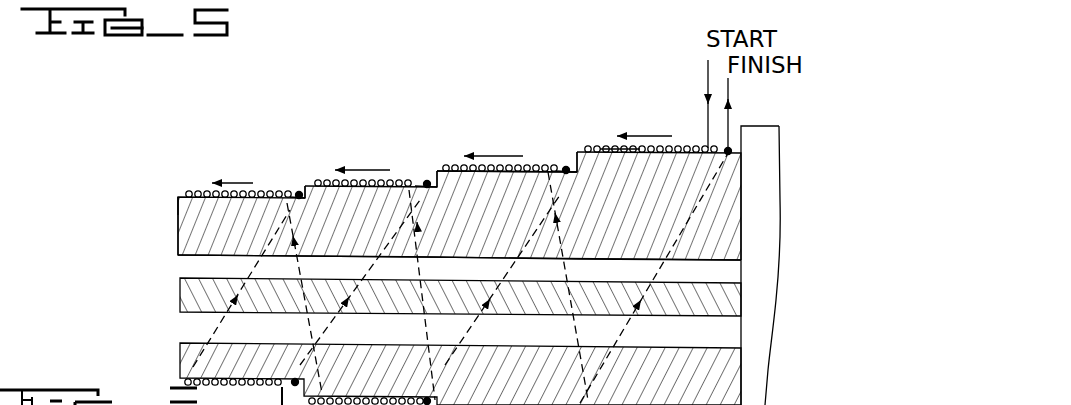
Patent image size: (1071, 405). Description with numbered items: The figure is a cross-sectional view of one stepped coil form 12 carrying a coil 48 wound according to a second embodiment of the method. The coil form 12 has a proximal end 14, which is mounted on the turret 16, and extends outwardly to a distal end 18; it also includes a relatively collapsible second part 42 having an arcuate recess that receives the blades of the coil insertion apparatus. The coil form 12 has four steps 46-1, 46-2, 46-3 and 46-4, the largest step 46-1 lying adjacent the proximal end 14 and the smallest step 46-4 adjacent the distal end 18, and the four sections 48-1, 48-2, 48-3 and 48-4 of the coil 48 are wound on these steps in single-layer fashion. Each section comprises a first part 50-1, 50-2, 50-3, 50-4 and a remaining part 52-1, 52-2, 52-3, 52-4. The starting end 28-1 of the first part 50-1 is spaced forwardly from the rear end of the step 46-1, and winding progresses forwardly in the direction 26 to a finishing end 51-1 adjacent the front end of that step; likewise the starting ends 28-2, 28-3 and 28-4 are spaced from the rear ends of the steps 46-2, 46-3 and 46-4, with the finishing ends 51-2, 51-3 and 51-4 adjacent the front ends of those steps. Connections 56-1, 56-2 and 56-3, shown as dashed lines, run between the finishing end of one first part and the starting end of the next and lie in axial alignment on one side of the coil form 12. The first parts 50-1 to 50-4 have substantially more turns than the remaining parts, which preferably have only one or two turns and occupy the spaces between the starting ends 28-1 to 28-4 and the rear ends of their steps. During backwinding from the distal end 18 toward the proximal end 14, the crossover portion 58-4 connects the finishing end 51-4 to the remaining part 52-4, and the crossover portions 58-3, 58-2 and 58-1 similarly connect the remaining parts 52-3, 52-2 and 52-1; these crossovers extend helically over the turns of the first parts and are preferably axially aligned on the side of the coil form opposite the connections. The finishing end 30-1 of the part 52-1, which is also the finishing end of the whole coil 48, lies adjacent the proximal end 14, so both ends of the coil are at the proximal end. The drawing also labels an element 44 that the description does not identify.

The coil form 12 is at (72, 227).
The proximal end 14 is at (743, 217).
The turret 16 is at (781, 177).
The distal end 18 is at (177, 226).
The direction 26 is at (665, 130).
The starting end 28-1 is at (706, 60).
The starting end 28-2 is at (553, 166).
The starting end 28-3 is at (412, 182).
The starting end 28-4 is at (296, 195).
The finishing end 30-1 is at (732, 97).
The second part 42 is at (146, 351).
The lower layer 44 is at (192, 328).
The coil form step 46-1 is at (660, 224).
The coil form step 46-2 is at (513, 232).
The coil form step 46-3 is at (387, 241).
The coil form step 46-4 is at (260, 247).
The coil 48 is at (453, 68).
The coil section 48-1 is at (638, 113).
The coil section 48-2 is at (482, 140).
The coil section 48-3 is at (331, 143).
The coil section 48-4 is at (201, 155).
The first part 50-1 is at (651, 169).
The first part 50-2 is at (500, 186).
The first part 50-3 is at (360, 199).
The first part 50-4 is at (237, 208).
The finishing end 51-1 is at (578, 150).
The finishing end 51-2 is at (442, 170).
The finishing end 51-3 is at (308, 183).
The finishing end 51-4 is at (186, 196).
The remaining part 52-1 is at (731, 152).
The remaining part 52-2 is at (565, 167).
The remaining part 52-3 is at (426, 181).
The remaining part 52-4 is at (299, 191).
The connection 56-1 is at (573, 264).
The connection 56-2 is at (424, 264).
The connection 56-3 is at (296, 264).
The crossover portion 58-1 is at (616, 329).
The crossover portion 58-2 is at (464, 329).
The crossover portion 58-3 is at (329, 329).
The crossover portion 58-4 is at (227, 329).